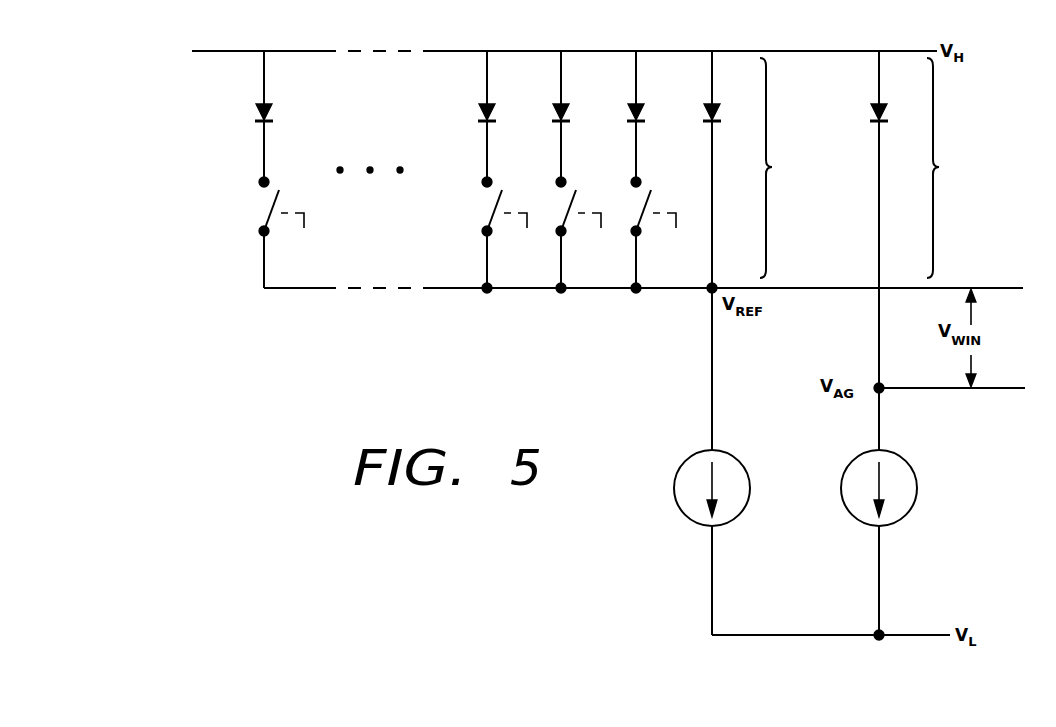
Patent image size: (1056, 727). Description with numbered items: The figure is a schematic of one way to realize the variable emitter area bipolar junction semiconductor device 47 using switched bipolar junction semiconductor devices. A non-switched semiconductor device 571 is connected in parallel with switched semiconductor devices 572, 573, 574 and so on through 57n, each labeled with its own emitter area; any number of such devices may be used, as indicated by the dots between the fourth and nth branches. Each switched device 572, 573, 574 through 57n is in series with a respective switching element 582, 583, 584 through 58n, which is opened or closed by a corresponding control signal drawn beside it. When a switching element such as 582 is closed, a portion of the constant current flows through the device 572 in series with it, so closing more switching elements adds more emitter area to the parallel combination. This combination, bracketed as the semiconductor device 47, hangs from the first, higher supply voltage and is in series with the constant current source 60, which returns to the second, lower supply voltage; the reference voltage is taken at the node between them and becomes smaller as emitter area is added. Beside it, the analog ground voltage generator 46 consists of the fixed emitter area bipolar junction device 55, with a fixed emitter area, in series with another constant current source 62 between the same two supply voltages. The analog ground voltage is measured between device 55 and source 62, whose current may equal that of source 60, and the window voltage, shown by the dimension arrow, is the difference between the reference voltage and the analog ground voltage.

The switched bipolar junction semiconductor device 57n is at (255, 112).
The switching element 58n is at (300, 174).
The switched bipolar junction semiconductor device 574 is at (478, 112).
The switched bipolar junction semiconductor device 573 is at (552, 112).
The switched bipolar junction semiconductor device 572 is at (627, 112).
The non-switched semiconductor device 571 is at (703, 112).
The switching element 584 is at (503, 193).
The switching element 583 is at (577, 193).
The switching element 582 is at (652, 193).
The fixed emitter area bipolar junction device 55 is at (870, 112).
The variable emitter area bipolar junction semiconductor device 47 is at (784, 168).
The analog ground voltage generator 46 is at (950, 168).
The constant current source 60 is at (750, 480).
The constant current source 62 is at (917, 480).